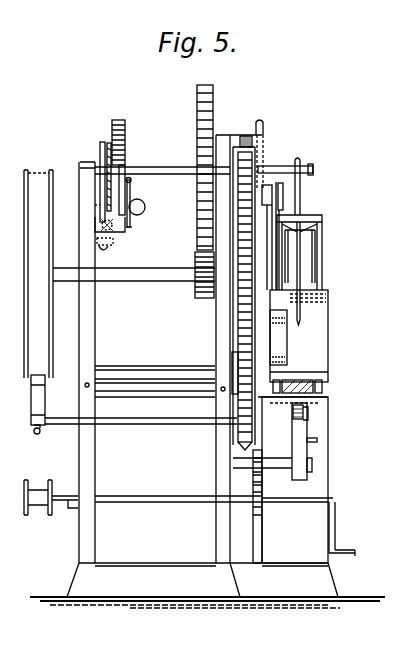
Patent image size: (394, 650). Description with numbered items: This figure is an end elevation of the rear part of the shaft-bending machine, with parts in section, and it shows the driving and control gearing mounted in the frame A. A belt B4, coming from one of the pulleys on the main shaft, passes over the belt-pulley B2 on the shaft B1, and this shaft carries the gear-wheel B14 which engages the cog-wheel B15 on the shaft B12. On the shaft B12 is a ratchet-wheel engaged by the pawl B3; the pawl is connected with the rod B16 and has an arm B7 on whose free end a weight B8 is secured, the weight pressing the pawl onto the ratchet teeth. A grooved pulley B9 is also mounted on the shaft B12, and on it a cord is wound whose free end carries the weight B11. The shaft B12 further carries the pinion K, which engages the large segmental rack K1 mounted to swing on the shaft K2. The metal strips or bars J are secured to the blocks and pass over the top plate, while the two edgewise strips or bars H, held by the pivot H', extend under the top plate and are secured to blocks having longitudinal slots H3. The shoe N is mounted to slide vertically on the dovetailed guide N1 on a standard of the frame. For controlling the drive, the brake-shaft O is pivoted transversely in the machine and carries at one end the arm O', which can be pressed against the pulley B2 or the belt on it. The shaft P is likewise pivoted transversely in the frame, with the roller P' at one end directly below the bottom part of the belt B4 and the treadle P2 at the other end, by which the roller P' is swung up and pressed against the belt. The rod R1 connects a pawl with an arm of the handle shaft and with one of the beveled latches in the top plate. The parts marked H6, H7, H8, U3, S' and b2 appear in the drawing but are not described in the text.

The frame A is at (90, 344).
The shaft B1 is at (118, 276).
The belt-pulley B2 is at (48, 298).
The pawl B3 is at (95, 227).
The belt B4 is at (99, 206).
The arm B7 is at (131, 185).
The weight B8 is at (146, 207).
The grooved pulley B9 is at (101, 153).
The weight B11 is at (105, 251).
The shaft B12 is at (176, 189).
The gear-wheel B14 is at (207, 297).
The cog-wheel B15 is at (126, 140).
The rod B16 is at (168, 168).
The rod R1 is at (131, 227).
The metal strips or bars J is at (239, 349).
The pinion K is at (239, 160).
The segmental rack K1 is at (240, 337).
The shaft K2 is at (233, 372).
The brake-shaft O is at (141, 423).
The arm O' is at (38, 404).
The shaft P is at (178, 492).
The roller P' is at (51, 497).
The treadle P2 is at (336, 532).
The metal strips or bars H is at (288, 422).
The pivot H' is at (314, 423).
The longitudinal slots H3 is at (313, 168).
The cylinder H6 is at (324, 255).
The rod H7 is at (301, 205).
The guide H8 is at (284, 196).
The stem U3 is at (318, 272).
The shoe N is at (293, 346).
The dovetailed guide N1 is at (287, 342).
The plate S' is at (280, 480).
The column b2 is at (246, 449).